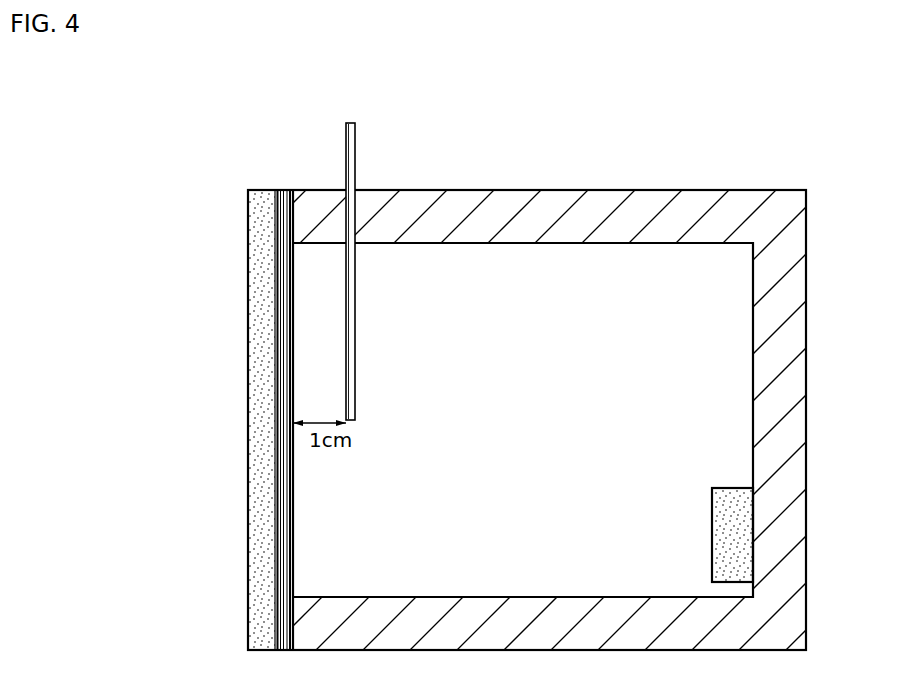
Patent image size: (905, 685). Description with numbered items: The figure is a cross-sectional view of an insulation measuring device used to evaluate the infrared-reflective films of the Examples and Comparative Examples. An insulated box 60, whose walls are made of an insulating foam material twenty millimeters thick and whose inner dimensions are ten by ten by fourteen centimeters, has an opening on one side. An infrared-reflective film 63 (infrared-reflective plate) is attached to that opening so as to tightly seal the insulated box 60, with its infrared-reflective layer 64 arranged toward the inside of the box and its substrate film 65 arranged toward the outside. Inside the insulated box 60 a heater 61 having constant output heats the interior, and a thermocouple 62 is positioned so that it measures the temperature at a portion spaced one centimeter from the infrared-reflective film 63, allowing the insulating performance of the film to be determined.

The insulated box 60 is at (779, 133).
The heater 61 is at (712, 489).
The thermocouple 62 is at (355, 293).
The infrared-reflective film 63 is at (274, 368).
The infrared-reflective layer 64 is at (285, 190).
The substrate film 65 is at (260, 190).